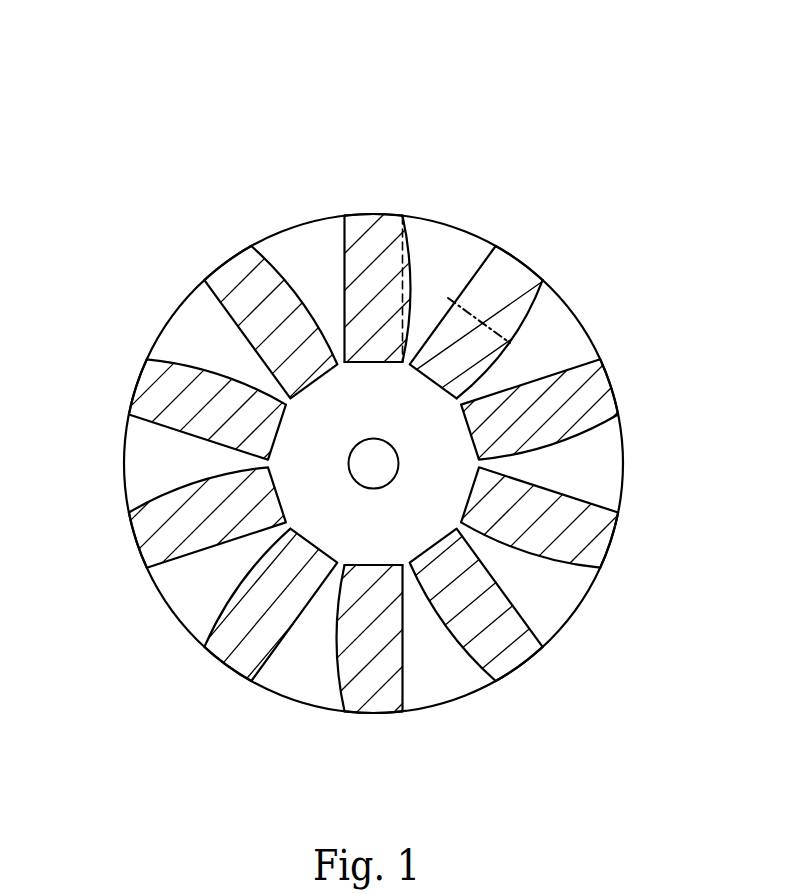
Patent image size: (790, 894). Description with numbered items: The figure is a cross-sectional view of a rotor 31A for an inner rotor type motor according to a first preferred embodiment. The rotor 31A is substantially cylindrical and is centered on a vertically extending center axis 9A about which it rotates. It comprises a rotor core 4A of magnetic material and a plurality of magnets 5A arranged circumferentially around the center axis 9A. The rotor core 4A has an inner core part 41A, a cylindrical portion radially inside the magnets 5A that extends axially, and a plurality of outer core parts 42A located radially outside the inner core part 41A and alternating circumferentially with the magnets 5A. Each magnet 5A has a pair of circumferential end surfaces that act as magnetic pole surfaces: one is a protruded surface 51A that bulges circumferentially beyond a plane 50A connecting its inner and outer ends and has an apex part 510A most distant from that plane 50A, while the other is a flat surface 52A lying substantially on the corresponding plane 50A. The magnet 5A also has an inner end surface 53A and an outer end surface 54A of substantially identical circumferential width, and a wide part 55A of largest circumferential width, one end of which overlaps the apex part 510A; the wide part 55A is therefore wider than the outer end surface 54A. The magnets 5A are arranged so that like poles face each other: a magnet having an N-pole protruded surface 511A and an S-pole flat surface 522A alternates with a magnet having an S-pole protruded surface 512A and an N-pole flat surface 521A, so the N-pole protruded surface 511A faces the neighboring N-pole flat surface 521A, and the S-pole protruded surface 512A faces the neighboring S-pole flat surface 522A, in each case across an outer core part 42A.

The rotor 31A is at (576, 128).
The rotor core 4A is at (675, 571).
The inner core part 41A is at (438, 492).
The outer core part 42A is at (538, 592).
The center axis 9A is at (373, 463).
The magnet 5A is at (147, 540).
The plane 50A is at (390, 250).
The protruded surface 51A is at (412, 248).
The apex part 510A is at (413, 290).
The flat surface 52A is at (345, 262).
The inner end surface 53A is at (438, 390).
The outer end surface 54A is at (517, 263).
The wide part 55A is at (490, 316).
The N-pole protruded surface 511A is at (338, 665).
The S-pole protruded surface 512A is at (468, 653).
The N-pole flat surface 521A is at (270, 653).
The S-pole flat surface 522A is at (403, 668).